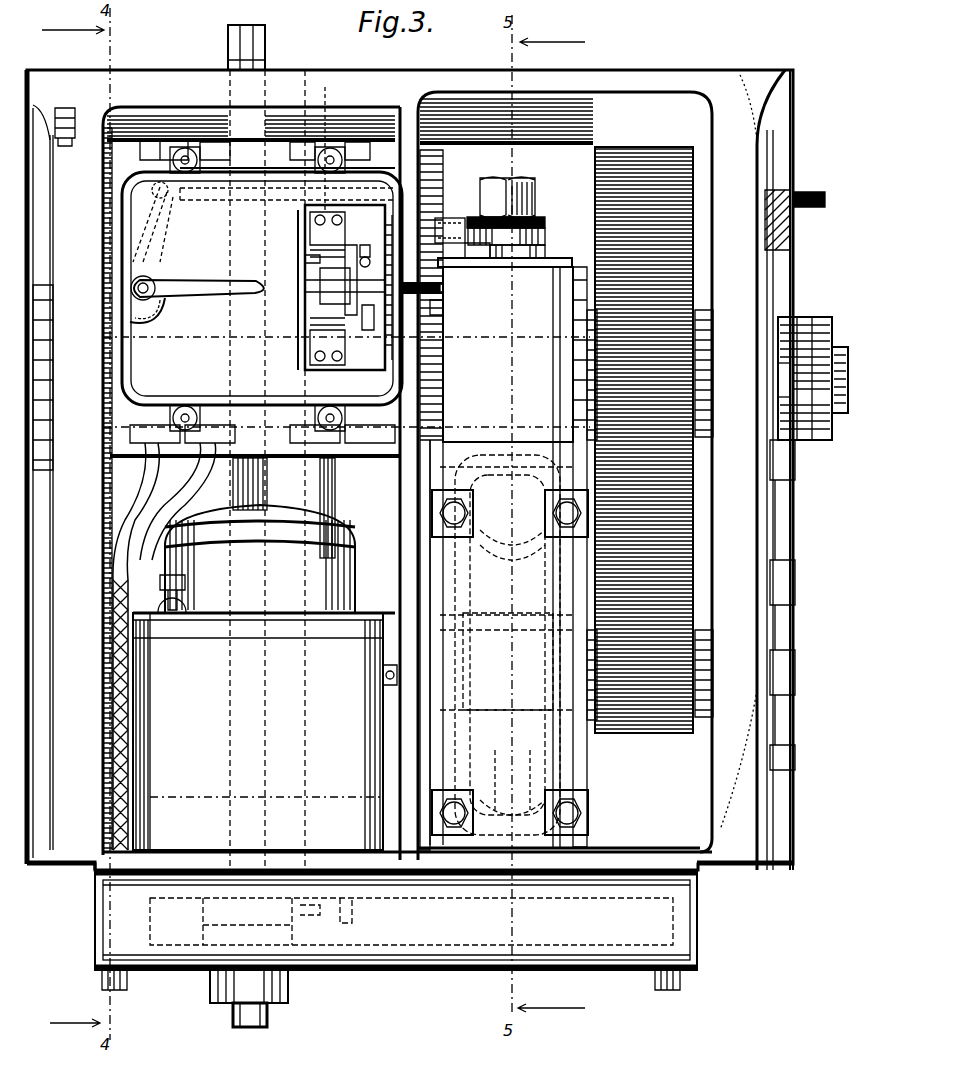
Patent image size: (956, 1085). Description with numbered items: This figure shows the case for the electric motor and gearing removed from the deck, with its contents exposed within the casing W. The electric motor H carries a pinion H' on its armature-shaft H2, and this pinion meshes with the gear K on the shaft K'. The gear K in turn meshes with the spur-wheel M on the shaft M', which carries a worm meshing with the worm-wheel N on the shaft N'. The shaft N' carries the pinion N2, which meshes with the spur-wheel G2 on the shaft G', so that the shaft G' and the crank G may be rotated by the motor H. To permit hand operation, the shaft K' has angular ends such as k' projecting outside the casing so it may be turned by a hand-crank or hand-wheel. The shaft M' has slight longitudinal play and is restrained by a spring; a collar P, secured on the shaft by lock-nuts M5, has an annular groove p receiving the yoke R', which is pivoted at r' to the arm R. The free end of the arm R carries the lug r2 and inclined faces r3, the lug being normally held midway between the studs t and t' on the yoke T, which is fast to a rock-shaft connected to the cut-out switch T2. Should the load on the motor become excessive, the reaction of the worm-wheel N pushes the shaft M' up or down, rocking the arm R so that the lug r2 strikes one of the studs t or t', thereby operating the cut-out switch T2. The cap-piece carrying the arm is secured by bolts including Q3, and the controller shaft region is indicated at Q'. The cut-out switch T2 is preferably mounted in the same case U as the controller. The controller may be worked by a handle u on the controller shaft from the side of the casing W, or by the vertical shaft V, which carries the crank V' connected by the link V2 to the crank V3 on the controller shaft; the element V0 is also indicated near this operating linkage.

The casing W is at (630, 70).
The angular end k' is at (266, 447).
The pivot r' is at (343, 126).
The controller casing U is at (346, 298).
The valve plate V0 is at (310, 172).
The link V2 is at (170, 205).
The crank V3 is at (165, 238).
The crank V' is at (286, 290).
The cut-out switch T2 is at (305, 258).
The handle u is at (215, 295).
The yoke T is at (305, 318).
The stud t' is at (361, 248).
The stud t is at (362, 332).
The arm R is at (450, 214).
The lock-nuts M5 is at (520, 178).
The annular groove p is at (545, 210).
The collar P is at (550, 245).
The bolt Q3 is at (505, 268).
The guide rod Q' is at (545, 557).
The lug r2 is at (470, 255).
The yoke R' is at (442, 292).
The inclined faces r3 is at (455, 310).
The shaft G' is at (627, 500).
The shaft N' is at (525, 642).
The worm-wheel N is at (510, 682).
The pinion N2 is at (660, 700).
The spur-wheel G2 is at (652, 435).
The crank G is at (806, 470).
The shaft K' is at (262, 484).
The vertical shaft V is at (338, 508).
The electric motor H is at (255, 646).
The gear K is at (410, 934).
The pinion H' is at (239, 978).
The armature-shaft H2 is at (268, 1015).
The shaft M' is at (559, 887).
The spur-wheel M is at (396, 949).